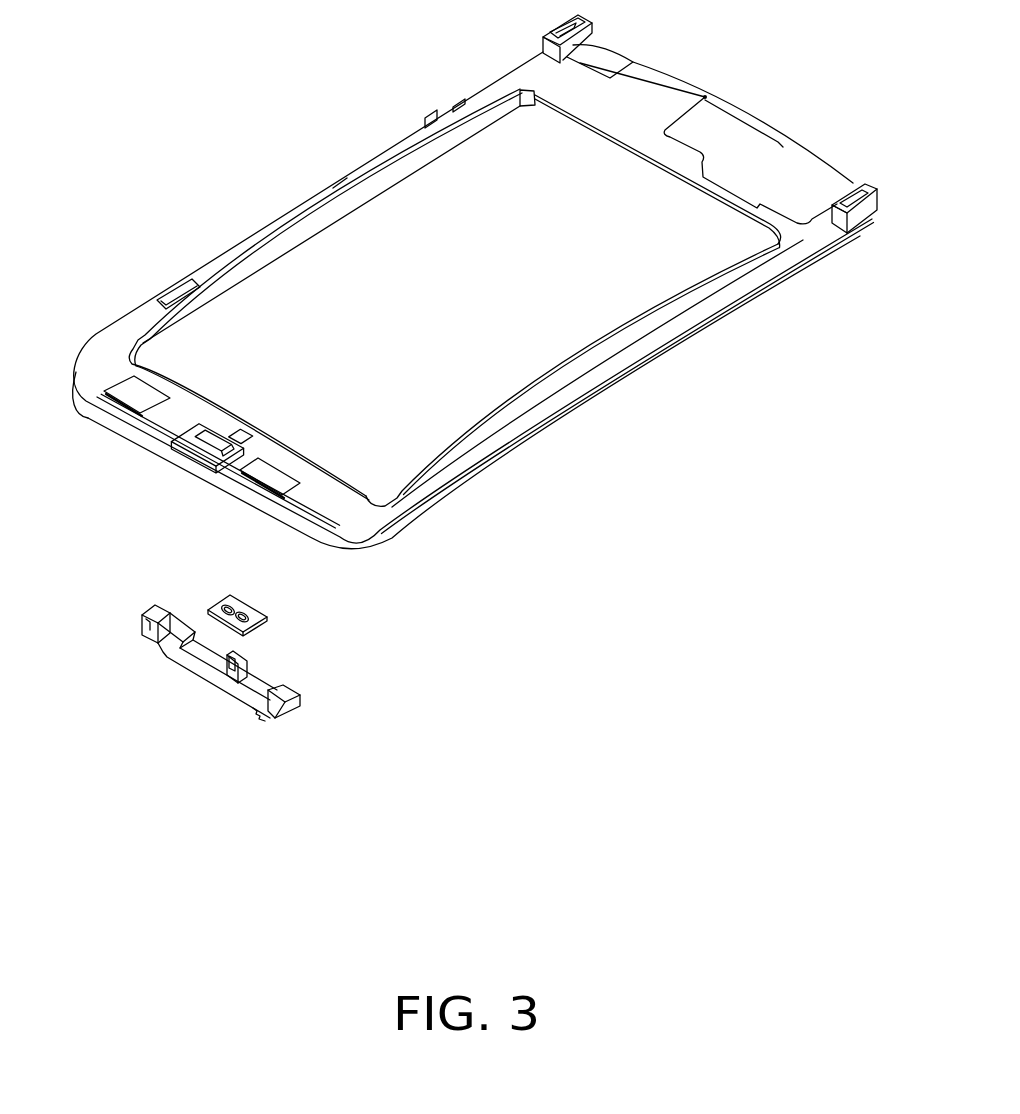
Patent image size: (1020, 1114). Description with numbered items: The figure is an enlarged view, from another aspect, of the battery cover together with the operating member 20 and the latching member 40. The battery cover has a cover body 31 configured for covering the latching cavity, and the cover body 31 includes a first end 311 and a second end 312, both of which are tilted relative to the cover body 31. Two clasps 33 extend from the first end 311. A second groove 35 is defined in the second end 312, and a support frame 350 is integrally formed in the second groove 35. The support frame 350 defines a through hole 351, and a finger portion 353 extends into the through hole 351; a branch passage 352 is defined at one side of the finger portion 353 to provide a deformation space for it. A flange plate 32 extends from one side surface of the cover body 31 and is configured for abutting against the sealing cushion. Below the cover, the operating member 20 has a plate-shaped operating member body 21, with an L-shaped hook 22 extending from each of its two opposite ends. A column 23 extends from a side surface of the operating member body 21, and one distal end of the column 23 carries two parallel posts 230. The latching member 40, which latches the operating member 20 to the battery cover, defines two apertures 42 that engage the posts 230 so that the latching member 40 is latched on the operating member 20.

The operating member 20 is at (229, 689).
The operating member body 21 is at (227, 693).
The L-shaped hook 22 is at (293, 687).
The column 23 is at (204, 712).
The posts 230 is at (223, 663).
The cover body 31 is at (800, 240).
The first end 311 is at (662, 88).
The second end 312 is at (100, 402).
The flange plate 32 is at (630, 332).
The clasps 33 is at (855, 215).
The second groove 35 is at (172, 427).
The support frame 350 is at (193, 437).
The through hole 351 is at (218, 447).
The branch passage 352 is at (240, 437).
The finger portion 353 is at (235, 445).
The latching member 40 is at (269, 611).
The apertures 42 is at (244, 615).